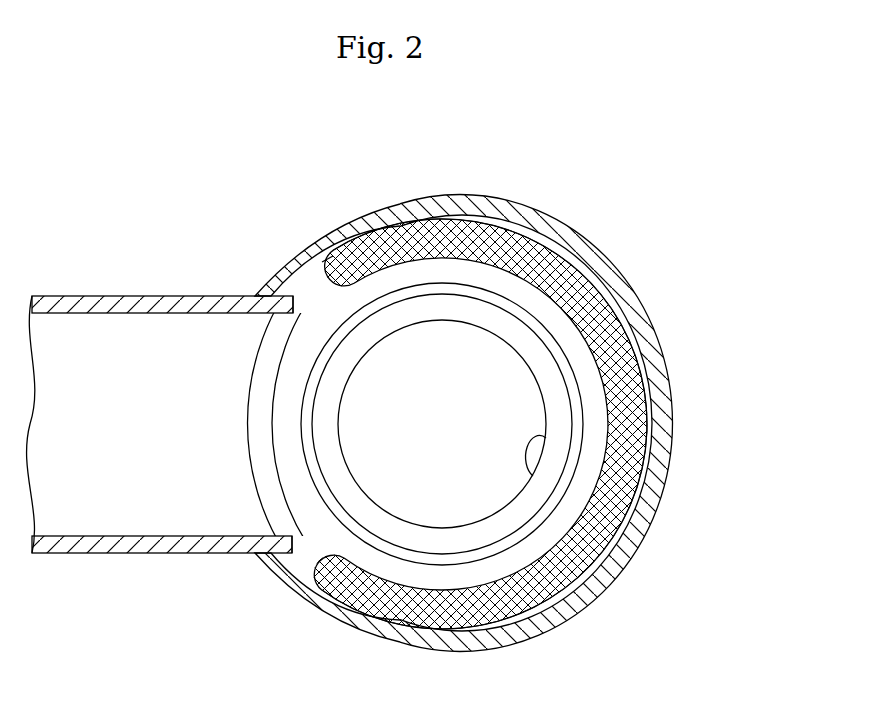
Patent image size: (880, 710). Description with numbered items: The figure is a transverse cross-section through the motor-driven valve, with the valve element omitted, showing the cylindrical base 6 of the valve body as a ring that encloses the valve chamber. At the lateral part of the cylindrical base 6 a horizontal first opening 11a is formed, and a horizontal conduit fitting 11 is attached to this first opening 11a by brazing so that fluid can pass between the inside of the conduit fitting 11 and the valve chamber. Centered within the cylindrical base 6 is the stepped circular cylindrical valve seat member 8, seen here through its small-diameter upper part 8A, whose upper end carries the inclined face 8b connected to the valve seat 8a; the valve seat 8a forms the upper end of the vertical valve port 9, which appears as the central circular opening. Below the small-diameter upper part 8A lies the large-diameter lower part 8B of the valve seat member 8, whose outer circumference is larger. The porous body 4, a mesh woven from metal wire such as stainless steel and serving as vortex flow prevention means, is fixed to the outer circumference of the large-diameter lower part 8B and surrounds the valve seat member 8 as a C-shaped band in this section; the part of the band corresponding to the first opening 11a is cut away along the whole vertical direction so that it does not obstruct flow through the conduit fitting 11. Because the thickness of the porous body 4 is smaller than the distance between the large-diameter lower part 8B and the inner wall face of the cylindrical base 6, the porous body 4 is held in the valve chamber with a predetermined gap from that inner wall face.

The porous body 4 is at (367, 223).
The cylindrical base 6 is at (486, 199).
The valve seat member 8 is at (640, 393).
The small-diameter upper part 8A is at (440, 355).
The large-diameter lower part 8B is at (668, 445).
The valve seat 8a is at (532, 477).
The inclined face 8b is at (497, 318).
The valve port 9 is at (357, 367).
The conduit fitting 11 is at (130, 296).
The first opening 11a is at (236, 320).